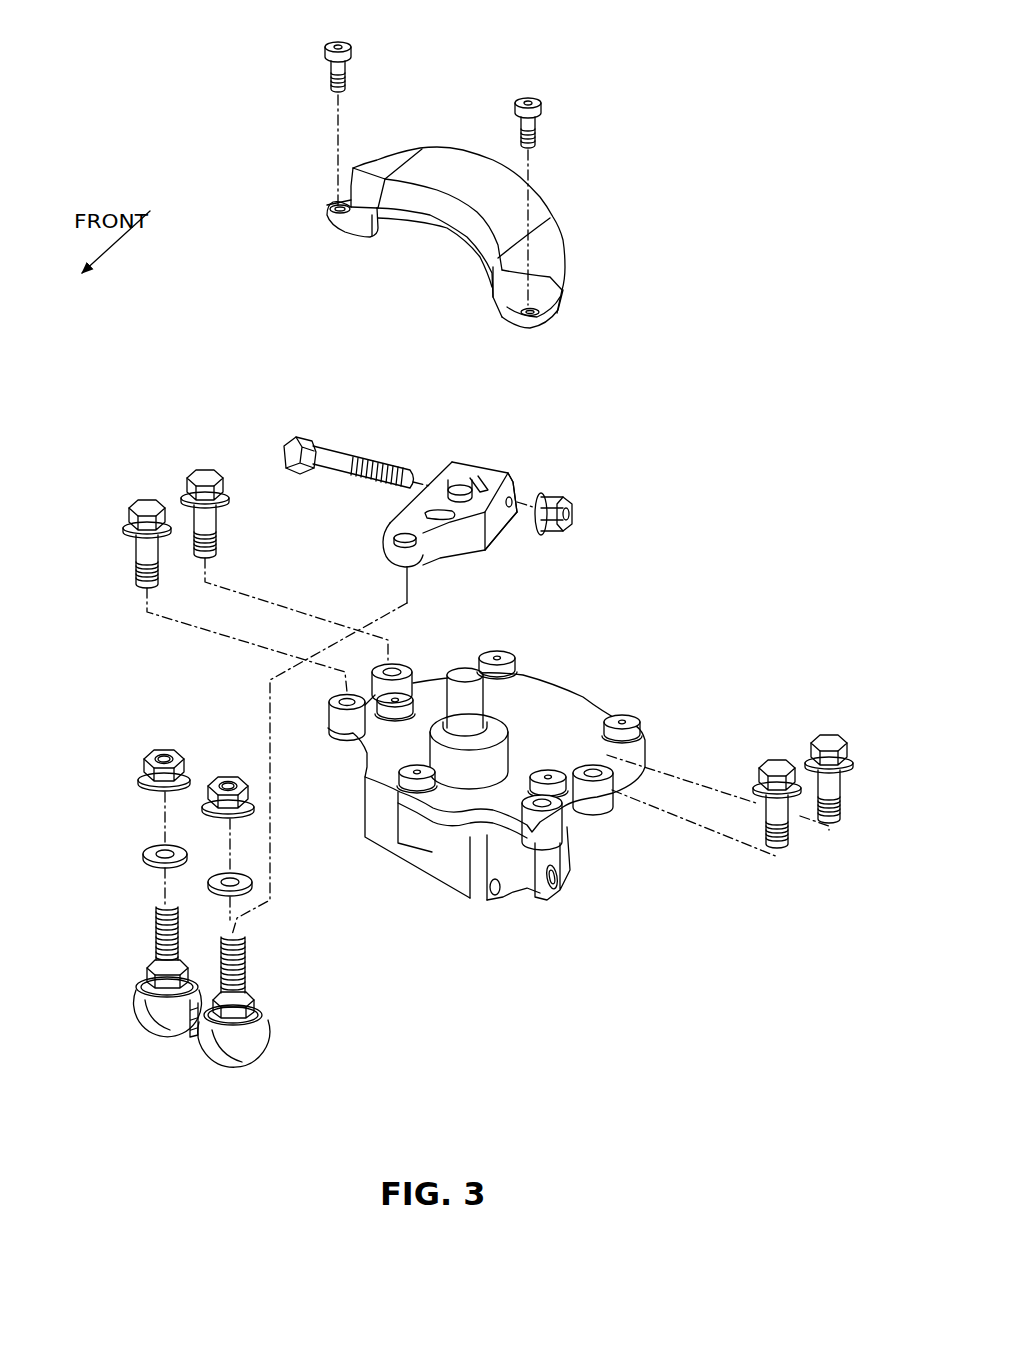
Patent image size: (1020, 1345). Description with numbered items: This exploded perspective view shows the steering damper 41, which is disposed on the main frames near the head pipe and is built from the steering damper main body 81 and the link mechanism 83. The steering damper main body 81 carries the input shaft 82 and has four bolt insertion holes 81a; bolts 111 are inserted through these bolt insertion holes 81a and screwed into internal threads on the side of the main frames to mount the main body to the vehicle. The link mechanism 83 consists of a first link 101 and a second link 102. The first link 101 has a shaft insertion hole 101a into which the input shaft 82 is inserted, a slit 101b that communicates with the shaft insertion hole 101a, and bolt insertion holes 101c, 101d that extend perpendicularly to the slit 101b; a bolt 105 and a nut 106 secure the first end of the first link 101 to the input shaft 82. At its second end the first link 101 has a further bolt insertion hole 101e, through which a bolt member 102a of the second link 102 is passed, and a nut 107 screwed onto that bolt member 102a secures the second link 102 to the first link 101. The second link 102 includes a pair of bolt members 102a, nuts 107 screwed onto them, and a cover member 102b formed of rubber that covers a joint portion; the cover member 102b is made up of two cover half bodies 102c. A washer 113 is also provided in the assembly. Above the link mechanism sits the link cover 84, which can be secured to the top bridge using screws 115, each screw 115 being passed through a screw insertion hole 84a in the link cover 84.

The steering damper 41 is at (752, 432).
The steering damper main body 81 is at (477, 738).
The bolt insertion hole 81a is at (392, 669).
The input shaft 82 is at (466, 670).
The link mechanism 83 is at (532, 420).
The link cover 84 is at (435, 195).
The screw insertion hole 84a is at (334, 205).
The first link 101 is at (442, 478).
The shaft insertion hole 101a is at (460, 487).
The slit 101b is at (482, 488).
The bolt insertion hole 101c is at (511, 497).
The bolt insertion hole 101d is at (518, 514).
The bolt insertion hole 101e is at (392, 538).
The second link 102 is at (207, 1018).
The bolt member 102a is at (158, 938).
The cover member 102b is at (168, 1040).
The cover half body 102c is at (142, 1008).
The bolt 105 is at (337, 450).
The nut 106 is at (568, 494).
The nut 107 is at (160, 750).
The bolt 111 is at (198, 518).
The washer 113 is at (150, 848).
The screw 115 is at (326, 48).